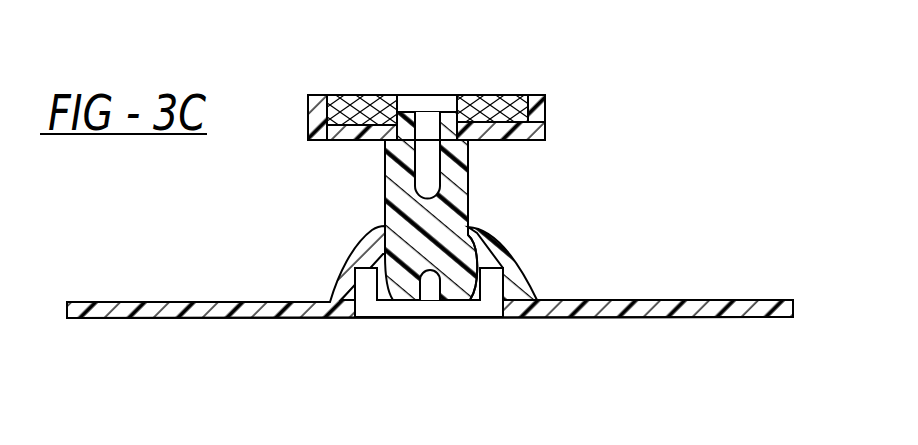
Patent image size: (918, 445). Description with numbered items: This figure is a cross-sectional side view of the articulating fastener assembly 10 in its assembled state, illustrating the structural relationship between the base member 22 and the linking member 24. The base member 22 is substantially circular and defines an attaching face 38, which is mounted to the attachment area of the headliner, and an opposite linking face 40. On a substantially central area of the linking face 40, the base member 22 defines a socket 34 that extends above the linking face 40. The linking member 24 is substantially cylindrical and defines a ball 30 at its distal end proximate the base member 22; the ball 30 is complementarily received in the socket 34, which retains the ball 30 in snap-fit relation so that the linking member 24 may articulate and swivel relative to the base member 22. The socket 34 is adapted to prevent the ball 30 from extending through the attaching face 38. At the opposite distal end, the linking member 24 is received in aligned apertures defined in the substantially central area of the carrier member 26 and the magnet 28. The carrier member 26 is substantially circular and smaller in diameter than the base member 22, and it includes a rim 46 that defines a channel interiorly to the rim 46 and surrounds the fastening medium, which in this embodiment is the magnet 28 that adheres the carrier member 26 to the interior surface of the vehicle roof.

The fastener assembly 10 is at (600, 186).
The base member 22 is at (797, 298).
The linking member 24 is at (472, 185).
The carrier member 26 is at (548, 108).
The magnet 28 is at (352, 95).
The ball 30 is at (480, 303).
The socket 34 is at (374, 306).
The attaching face 38 is at (190, 322).
The linking face 40 is at (164, 298).
The rim 46 is at (540, 95).